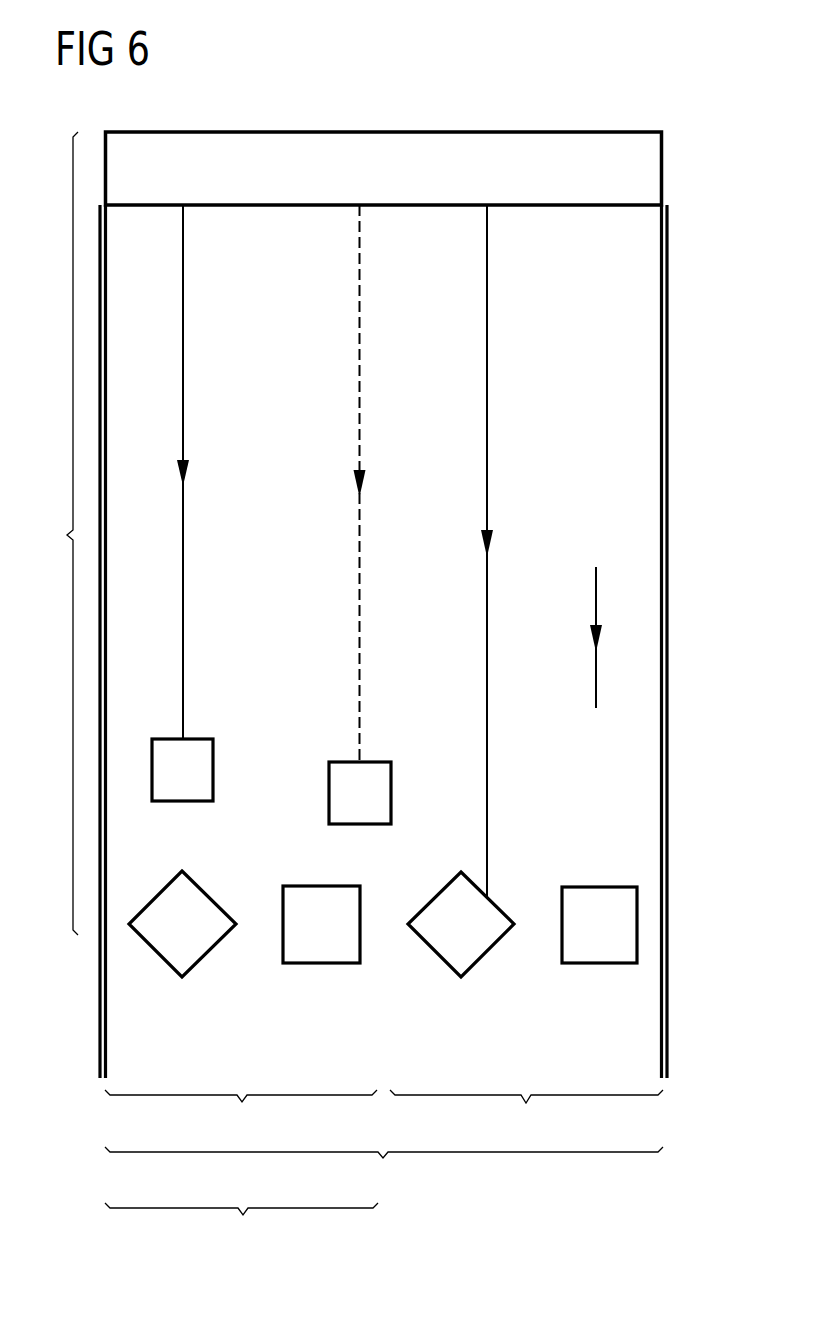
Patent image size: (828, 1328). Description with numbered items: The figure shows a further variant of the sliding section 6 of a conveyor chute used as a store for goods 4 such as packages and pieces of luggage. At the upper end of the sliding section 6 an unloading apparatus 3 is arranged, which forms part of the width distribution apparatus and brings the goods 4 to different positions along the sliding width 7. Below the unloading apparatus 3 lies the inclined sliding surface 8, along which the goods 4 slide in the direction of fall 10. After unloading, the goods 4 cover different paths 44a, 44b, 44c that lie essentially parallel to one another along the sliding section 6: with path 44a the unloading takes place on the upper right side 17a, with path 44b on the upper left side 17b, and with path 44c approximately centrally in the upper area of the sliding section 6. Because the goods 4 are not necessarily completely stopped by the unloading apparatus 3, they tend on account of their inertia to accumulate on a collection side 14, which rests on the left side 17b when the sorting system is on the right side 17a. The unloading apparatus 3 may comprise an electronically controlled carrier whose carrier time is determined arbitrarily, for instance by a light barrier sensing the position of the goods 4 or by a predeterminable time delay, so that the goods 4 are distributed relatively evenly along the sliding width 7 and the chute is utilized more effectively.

The unloading apparatus 3 is at (662, 170).
The goods 4 is at (213, 770).
The sliding section 6 is at (64, 533).
The sliding width 7 is at (384, 1172).
The sliding surface 8 is at (620, 509).
The direction of fall 10 is at (596, 598).
The collection side 14 is at (241, 1229).
The right side 17a is at (526, 1116).
The left side 17b is at (241, 1116).
The path 44a is at (487, 338).
The path 44b is at (183, 343).
The path 44c is at (360, 342).